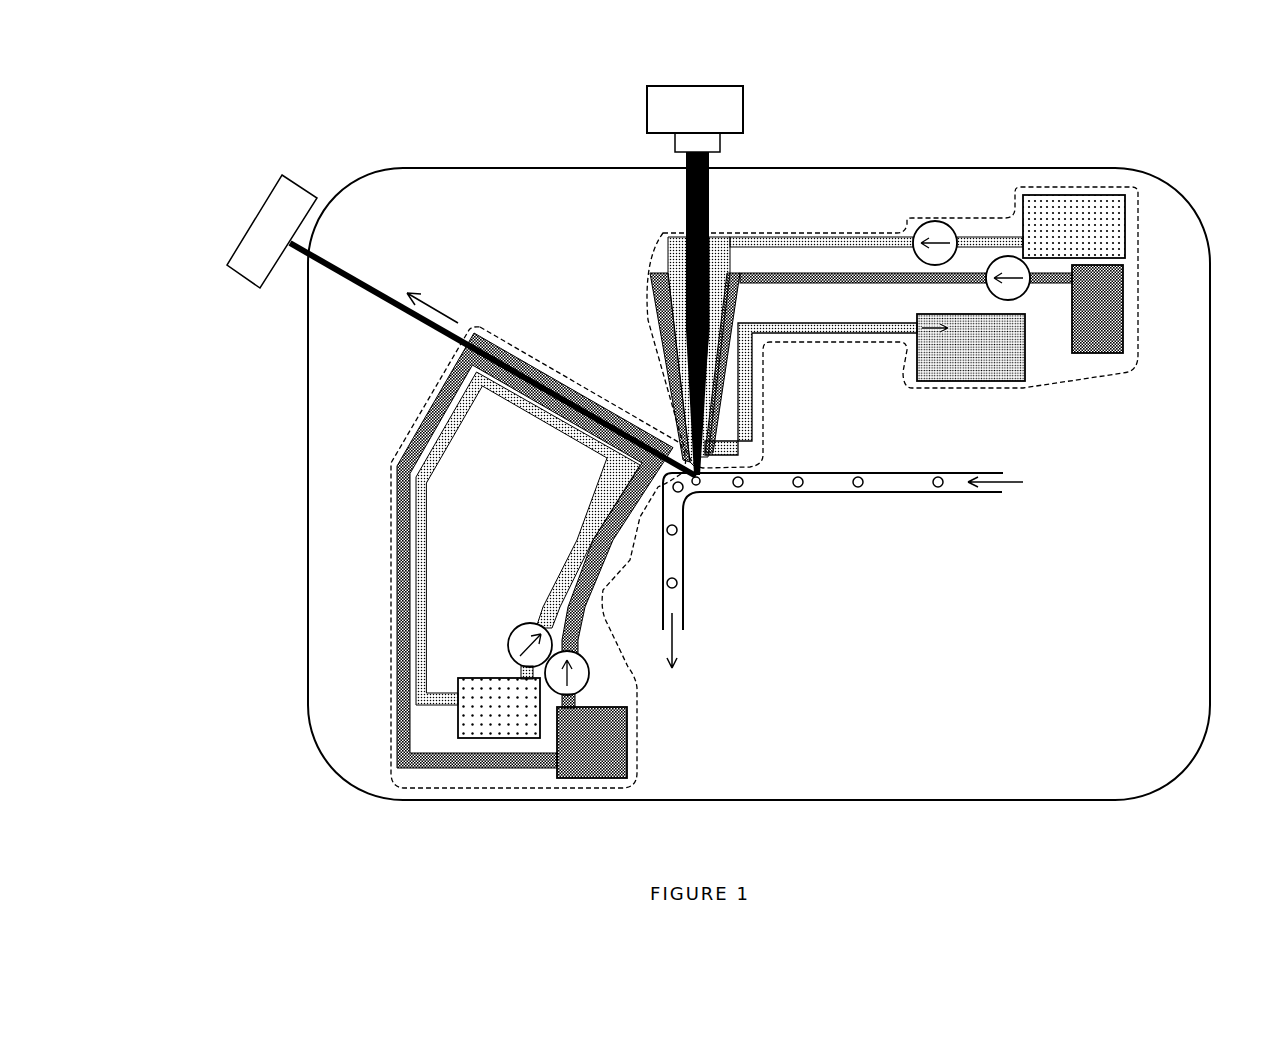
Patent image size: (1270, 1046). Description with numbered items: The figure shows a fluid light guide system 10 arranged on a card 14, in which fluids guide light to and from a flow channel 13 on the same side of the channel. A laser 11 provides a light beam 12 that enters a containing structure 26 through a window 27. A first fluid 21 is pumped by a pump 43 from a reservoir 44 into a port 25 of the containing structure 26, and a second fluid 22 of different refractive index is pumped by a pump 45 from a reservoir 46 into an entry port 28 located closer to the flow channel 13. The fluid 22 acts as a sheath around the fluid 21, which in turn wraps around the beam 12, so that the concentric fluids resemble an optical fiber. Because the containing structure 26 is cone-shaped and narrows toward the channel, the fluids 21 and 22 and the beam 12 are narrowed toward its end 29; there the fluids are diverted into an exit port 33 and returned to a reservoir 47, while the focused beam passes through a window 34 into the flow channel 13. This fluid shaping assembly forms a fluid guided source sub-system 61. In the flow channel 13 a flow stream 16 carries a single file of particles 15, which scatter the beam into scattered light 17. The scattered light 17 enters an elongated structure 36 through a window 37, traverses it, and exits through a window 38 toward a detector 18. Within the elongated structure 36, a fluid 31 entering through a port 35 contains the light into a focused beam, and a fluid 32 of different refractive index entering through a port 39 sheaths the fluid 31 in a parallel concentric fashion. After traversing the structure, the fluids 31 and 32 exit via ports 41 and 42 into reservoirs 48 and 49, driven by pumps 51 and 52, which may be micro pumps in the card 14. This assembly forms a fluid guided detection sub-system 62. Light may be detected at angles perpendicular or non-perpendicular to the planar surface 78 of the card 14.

The fluid light guide system 10 is at (436, 116).
The laser 11 is at (647, 112).
The light beam 12 is at (686, 186).
The flow channel 13 is at (883, 473).
The card 14 is at (960, 170).
The particles 15 is at (738, 487).
The flow stream 16 is at (822, 483).
The scattered light 17 is at (388, 297).
The detector 18 is at (227, 266).
The fluid 21 is at (666, 253).
The second layer of fluid 22 is at (652, 278).
The port 25 is at (812, 237).
The containing structure 26 is at (663, 350).
The window 27 is at (678, 238).
The entry port 28 is at (770, 281).
The end 29 is at (680, 435).
The fluid 31 is at (423, 487).
The fluid 32 is at (395, 497).
The exit port 33 is at (790, 332).
The window 34 is at (753, 462).
The port 35 is at (627, 487).
The elongated structure 36 is at (578, 383).
The window 37 is at (652, 500).
The window 38 is at (463, 347).
The port 39 is at (640, 540).
The port 41 is at (466, 388).
The port 42 is at (433, 397).
The pump 43 is at (945, 222).
The reservoir 44 is at (1123, 220).
The pump 45 is at (1023, 292).
The reservoir 46 is at (1123, 288).
The reservoir 47 is at (970, 382).
The reservoir 48 is at (500, 678).
The reservoir 49 is at (625, 740).
The pump 51 is at (513, 632).
The pump 52 is at (588, 673).
The fluid guided source sub-system 61 is at (1117, 368).
The fluid guided detection sub-system 62 is at (637, 760).
The planar surface 78 is at (923, 682).